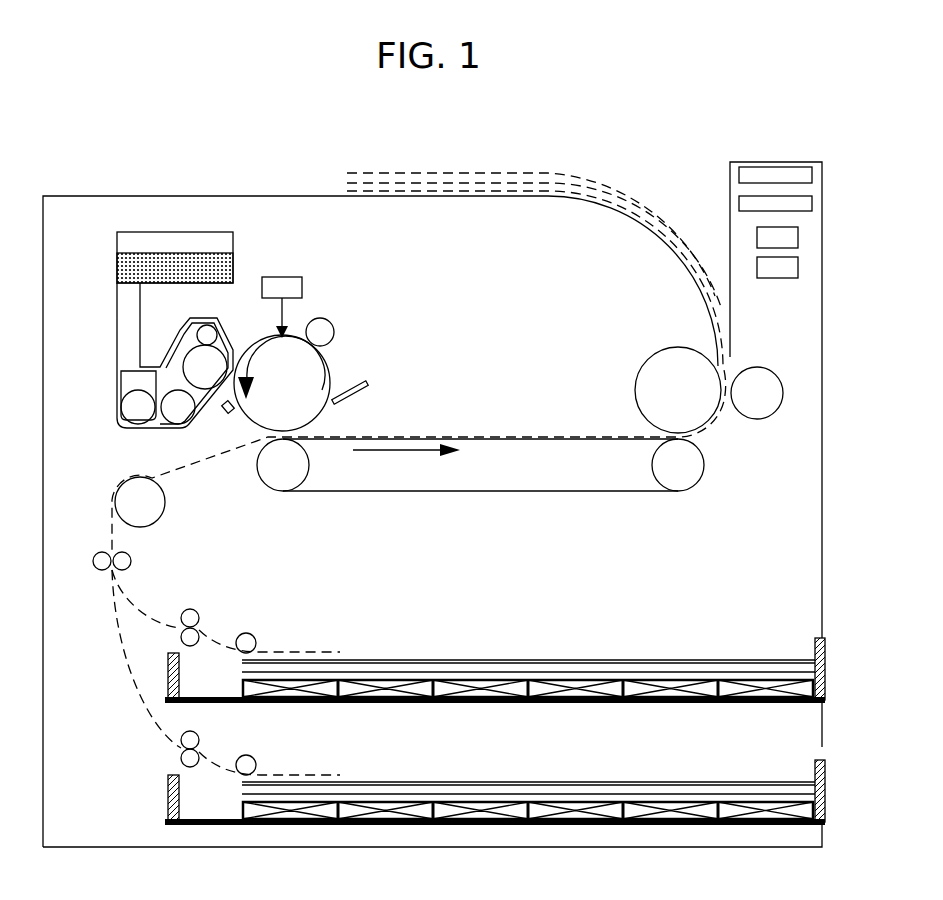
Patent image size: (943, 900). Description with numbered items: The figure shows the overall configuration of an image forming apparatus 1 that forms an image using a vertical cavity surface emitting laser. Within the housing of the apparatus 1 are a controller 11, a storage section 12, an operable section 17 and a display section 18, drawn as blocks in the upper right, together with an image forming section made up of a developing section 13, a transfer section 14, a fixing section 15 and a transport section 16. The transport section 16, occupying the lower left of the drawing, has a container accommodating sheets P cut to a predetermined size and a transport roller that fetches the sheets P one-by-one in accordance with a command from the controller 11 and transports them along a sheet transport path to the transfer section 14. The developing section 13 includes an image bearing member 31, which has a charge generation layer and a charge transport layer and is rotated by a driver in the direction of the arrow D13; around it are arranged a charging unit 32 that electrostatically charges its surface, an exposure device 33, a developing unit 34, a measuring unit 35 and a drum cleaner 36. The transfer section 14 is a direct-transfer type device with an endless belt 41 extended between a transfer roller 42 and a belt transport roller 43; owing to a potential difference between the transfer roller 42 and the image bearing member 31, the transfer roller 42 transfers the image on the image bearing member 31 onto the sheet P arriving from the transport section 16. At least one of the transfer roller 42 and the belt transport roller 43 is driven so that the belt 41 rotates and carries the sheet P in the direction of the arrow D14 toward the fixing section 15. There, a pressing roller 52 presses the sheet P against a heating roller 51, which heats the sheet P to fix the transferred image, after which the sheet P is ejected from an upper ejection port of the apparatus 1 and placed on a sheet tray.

The image forming apparatus 1 is at (200, 196).
The controller 11 is at (757, 237).
The storage section 12 is at (757, 267).
The developing section 13 is at (400, 258).
The transfer section 14 is at (700, 535).
The fixing section 15 is at (611, 288).
The transport section 16 is at (98, 502).
The operable section 17 is at (739, 175).
The display section 18 is at (739, 203).
The image bearing member 31 is at (326, 364).
The charging unit 32 is at (334, 333).
The exposure device 33 is at (302, 288).
The developing unit 34 is at (117, 382).
The measuring unit 35 is at (226, 411).
The drum cleaner 36 is at (347, 397).
The belt 41 is at (522, 491).
The transfer roller 42 is at (283, 491).
The belt transport roller 43 is at (678, 491).
The heating roller 51 is at (666, 357).
The pressing roller 52 is at (758, 376).
The sheet P is at (688, 661).
The rotation direction of image bearing member D13 is at (281, 369).
The sheet transport direction D14 is at (406, 465).